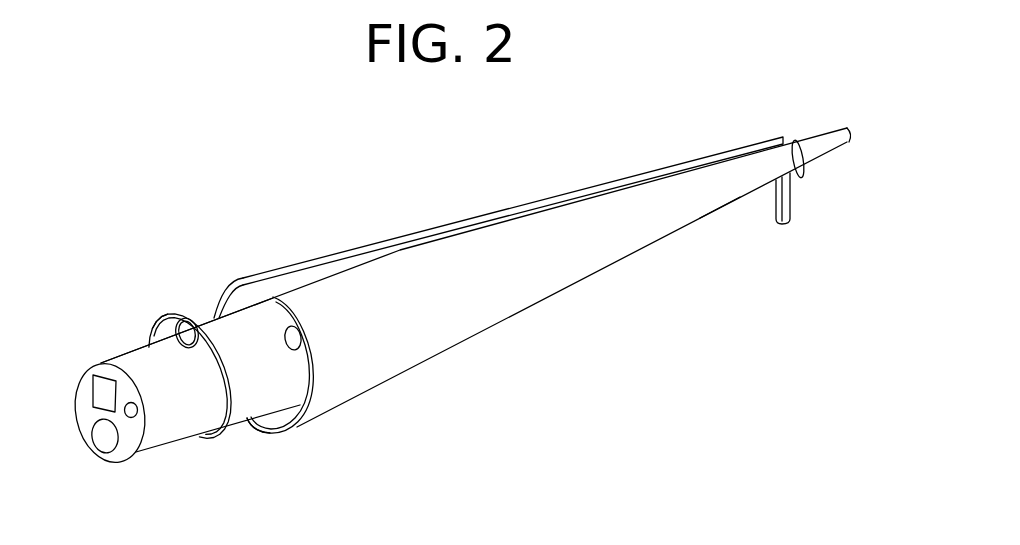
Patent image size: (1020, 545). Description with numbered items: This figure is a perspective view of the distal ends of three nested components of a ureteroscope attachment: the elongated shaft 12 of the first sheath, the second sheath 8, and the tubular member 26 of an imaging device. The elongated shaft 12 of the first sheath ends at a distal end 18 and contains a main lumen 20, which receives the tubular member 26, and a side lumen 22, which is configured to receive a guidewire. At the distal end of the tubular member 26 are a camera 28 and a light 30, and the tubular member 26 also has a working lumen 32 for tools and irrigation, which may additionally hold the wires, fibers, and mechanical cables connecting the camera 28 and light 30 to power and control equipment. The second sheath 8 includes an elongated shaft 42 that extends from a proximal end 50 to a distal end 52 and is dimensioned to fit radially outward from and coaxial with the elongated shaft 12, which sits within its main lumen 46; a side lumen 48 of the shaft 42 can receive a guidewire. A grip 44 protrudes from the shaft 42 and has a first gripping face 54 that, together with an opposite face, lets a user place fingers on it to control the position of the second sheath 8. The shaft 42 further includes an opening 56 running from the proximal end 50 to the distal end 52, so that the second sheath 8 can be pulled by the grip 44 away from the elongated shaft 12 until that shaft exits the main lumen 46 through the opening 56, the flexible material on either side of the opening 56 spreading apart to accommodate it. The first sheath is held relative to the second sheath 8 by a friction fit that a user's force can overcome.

The second sheath 8 is at (647, 230).
The elongated shaft 12 is at (839, 126).
The distal end 18 is at (192, 438).
The main lumen 20 is at (163, 336).
The side lumen 22 is at (187, 328).
The tubular member 26 is at (133, 363).
The camera 28 is at (97, 393).
The light 30 is at (132, 410).
The working lumen 32 is at (103, 437).
The elongated shaft 42 is at (717, 195).
The grip 44 is at (784, 213).
The main lumen 46 is at (283, 417).
The side lumen 48 is at (298, 338).
The proximal end 50 is at (792, 140).
The distal end 52 is at (283, 435).
The first gripping face 54 is at (785, 197).
The opening 56 is at (520, 211).